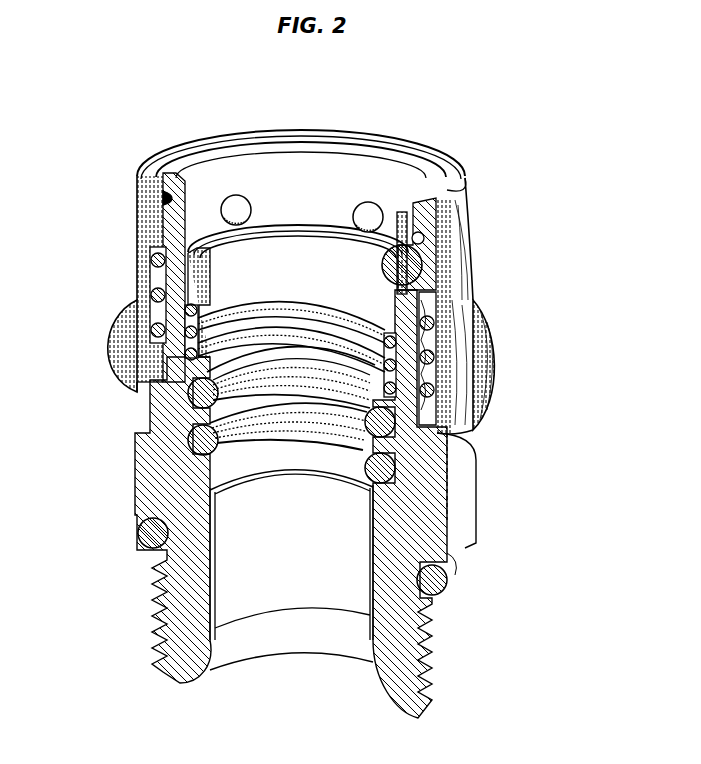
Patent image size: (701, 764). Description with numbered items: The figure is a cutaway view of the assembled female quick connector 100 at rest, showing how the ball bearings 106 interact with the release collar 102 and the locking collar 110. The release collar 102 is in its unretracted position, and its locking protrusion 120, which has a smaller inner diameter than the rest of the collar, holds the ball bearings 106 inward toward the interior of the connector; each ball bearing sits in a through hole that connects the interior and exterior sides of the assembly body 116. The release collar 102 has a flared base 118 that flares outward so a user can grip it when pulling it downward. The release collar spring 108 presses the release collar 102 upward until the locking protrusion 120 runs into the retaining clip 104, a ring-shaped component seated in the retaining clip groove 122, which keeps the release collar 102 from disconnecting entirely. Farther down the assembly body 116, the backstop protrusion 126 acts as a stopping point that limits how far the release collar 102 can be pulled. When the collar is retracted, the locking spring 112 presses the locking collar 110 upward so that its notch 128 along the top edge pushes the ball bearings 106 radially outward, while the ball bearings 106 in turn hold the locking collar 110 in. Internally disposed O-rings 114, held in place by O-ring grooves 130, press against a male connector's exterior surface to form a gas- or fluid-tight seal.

The female quick connector 100 is at (139, 129).
The release collar 102 is at (462, 295).
The retaining clip 104 is at (163, 200).
The ball bearings 106 is at (400, 257).
The release collar spring 108 is at (160, 330).
The locking collar 110 is at (293, 248).
The locking spring 112 is at (192, 357).
The O-rings 114 is at (392, 472).
The assembly body 116 is at (437, 540).
The flared base 118 is at (478, 396).
The locking protrusion 120 is at (432, 262).
The retaining clip groove 122 is at (181, 200).
The backstop protrusion 126 is at (148, 428).
The notch 128 is at (395, 290).
The O-ring grooves 130 is at (193, 447).